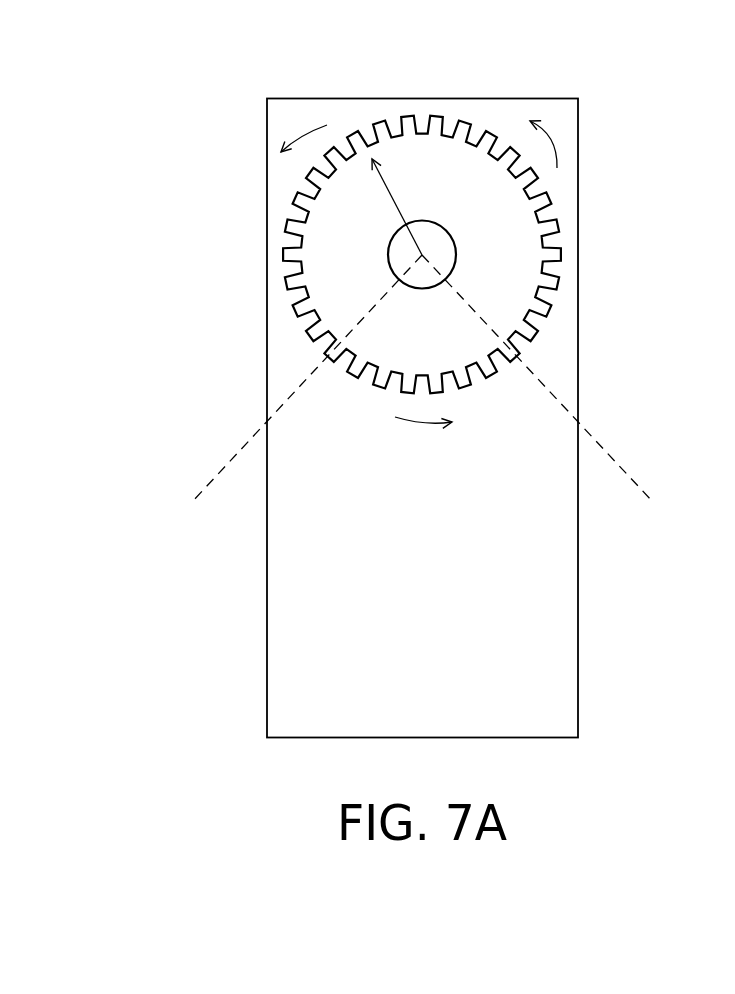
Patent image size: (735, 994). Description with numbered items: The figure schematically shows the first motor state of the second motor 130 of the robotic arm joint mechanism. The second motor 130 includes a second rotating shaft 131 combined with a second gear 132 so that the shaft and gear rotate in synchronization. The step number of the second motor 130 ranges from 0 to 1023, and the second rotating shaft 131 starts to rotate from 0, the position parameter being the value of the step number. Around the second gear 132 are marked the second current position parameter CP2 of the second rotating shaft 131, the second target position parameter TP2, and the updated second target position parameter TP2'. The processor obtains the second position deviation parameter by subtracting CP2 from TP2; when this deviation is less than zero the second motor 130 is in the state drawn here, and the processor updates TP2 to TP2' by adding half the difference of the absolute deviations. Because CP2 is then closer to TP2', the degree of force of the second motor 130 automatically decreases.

The second motor 130 is at (565, 99).
The second gear 132 is at (502, 188).
The second rotating shaft 131 is at (457, 250).
The second current position parameter CP2 is at (355, 124).
The updated second target position parameter TP2' is at (437, 70).
The second target position parameter TP2 is at (512, 85).
The maximum step number of the second motor 1023 is at (279, 400).
The starting step number of the second motor 0 is at (543, 398).